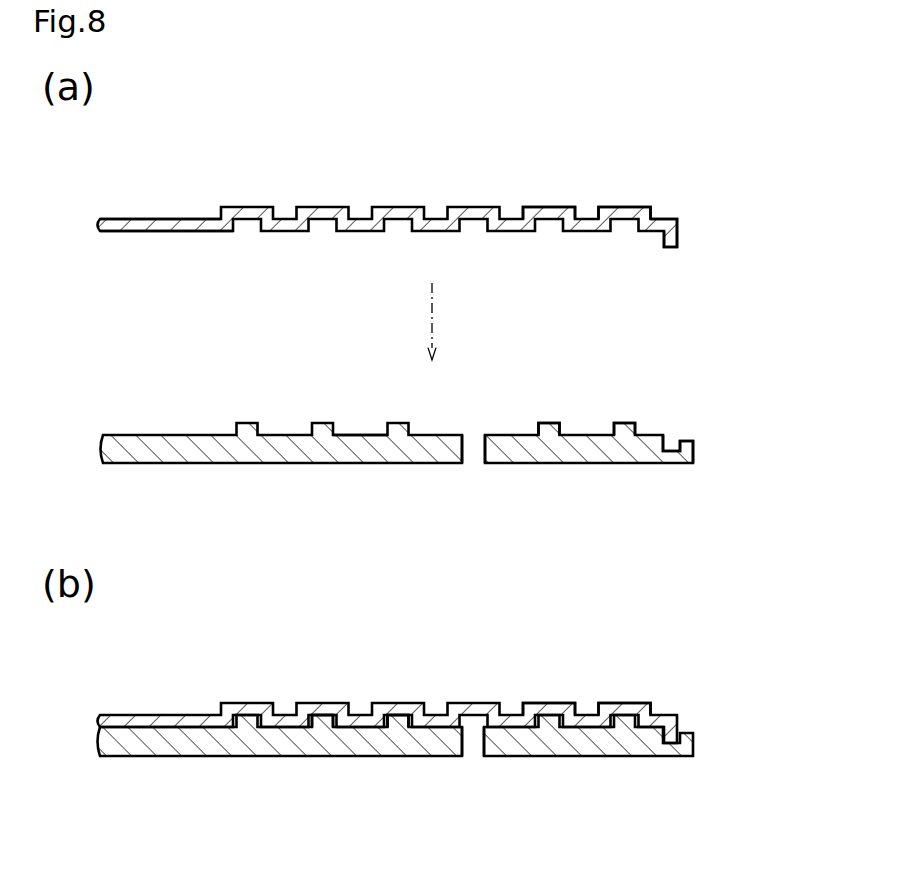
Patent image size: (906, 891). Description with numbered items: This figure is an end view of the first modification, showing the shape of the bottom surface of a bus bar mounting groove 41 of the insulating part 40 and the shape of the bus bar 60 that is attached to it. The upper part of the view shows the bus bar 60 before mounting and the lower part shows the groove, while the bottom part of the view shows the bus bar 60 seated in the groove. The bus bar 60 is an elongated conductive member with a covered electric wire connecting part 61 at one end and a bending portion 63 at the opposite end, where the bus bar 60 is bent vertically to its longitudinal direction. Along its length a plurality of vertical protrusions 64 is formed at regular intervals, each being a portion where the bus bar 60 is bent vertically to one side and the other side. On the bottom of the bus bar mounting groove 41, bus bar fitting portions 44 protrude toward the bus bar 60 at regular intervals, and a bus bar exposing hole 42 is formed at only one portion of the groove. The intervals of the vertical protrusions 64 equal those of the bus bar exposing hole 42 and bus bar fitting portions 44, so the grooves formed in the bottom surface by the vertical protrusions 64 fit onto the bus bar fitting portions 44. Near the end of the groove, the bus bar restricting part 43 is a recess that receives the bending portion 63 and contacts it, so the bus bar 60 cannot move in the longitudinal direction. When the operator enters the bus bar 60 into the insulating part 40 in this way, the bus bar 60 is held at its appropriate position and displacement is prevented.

The insulating part 40 is at (727, 435).
The bus bar mounting groove 41 is at (358, 432).
The bus bar exposing hole 42 is at (475, 440).
The bus bar restricting part 43 is at (673, 446).
The bus bar fitting portion 44 is at (547, 424).
The bus bar 60 is at (713, 205).
The covered electric wire connecting part 61 is at (168, 227).
The bending portion 63 is at (677, 242).
The vertical protrusion 64 is at (550, 213).